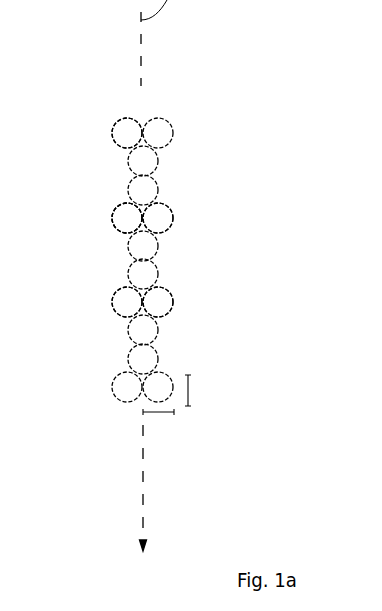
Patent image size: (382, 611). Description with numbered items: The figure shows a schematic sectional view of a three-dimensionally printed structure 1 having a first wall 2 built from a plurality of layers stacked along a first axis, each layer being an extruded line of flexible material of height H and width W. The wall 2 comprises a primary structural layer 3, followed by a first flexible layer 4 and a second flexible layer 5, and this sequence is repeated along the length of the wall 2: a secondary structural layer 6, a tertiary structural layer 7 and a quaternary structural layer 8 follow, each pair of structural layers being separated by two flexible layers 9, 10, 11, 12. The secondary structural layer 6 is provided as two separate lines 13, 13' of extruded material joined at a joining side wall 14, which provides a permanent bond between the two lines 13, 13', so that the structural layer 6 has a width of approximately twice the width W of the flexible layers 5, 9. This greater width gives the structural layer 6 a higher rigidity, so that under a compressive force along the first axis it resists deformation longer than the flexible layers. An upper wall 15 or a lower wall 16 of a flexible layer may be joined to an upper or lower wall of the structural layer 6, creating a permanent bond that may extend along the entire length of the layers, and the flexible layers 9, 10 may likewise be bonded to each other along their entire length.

The 3D printed structure 1 is at (215, 103).
The first wall 2 is at (127, 118).
The primary structural layer 3 is at (110, 141).
The first flexible layer 4 is at (143, 159).
The second flexible layer 5 is at (128, 194).
The secondary structural layer 6 is at (123, 224).
The tertiary structural layer 7 is at (113, 308).
The quaternary structural layer 8 is at (130, 387).
The flexible layer 9 is at (148, 246).
The flexible layer 10 is at (128, 274).
The flexible layer 11 is at (158, 331).
The flexible layer 12 is at (128, 364).
The line of extruded flexible material 13 is at (82, 215).
The line of extruded flexible material 13' is at (207, 217).
The joining side wall 14 is at (145, 219).
The upper wall of the flexible wall 15 is at (165, 300).
The lower wall of the flexible wall 16 is at (158, 305).
The height H is at (193, 392).
The width W is at (165, 416).